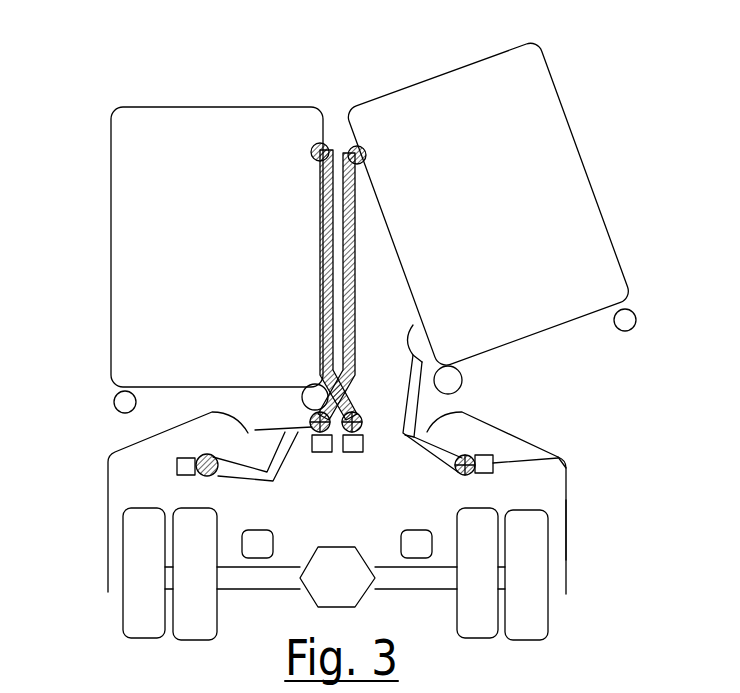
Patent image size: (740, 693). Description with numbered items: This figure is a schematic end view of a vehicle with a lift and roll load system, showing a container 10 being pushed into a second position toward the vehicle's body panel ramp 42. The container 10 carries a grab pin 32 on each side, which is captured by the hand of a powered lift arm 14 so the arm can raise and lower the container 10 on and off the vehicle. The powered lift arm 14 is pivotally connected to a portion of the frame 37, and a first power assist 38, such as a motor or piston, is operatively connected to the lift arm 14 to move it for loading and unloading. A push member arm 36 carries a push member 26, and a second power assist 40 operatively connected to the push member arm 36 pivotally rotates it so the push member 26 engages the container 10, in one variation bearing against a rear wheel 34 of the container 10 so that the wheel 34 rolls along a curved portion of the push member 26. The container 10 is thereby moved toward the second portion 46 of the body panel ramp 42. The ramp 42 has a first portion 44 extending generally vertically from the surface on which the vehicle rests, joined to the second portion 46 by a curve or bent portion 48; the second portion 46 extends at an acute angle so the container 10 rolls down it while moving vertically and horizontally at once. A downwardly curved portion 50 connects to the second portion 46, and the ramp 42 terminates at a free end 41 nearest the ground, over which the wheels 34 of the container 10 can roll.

The container 10 is at (131, 106).
The powered lift arm 14 is at (320, 212).
The grab pin 32 is at (311, 150).
The wheel 34 is at (114, 402).
The push member 26 is at (413, 322).
The downwardly curved portion 50 is at (424, 416).
The second portion 46 is at (529, 428).
The second power assist 40 is at (177, 460).
The curve or bent portion 48 is at (565, 463).
The first power assist 38 is at (316, 453).
The push member arm 36 is at (430, 447).
The first portion 44 is at (568, 540).
The body panel ramp 42 is at (108, 562).
The free end 41 is at (566, 592).
The frame 37 is at (263, 545).